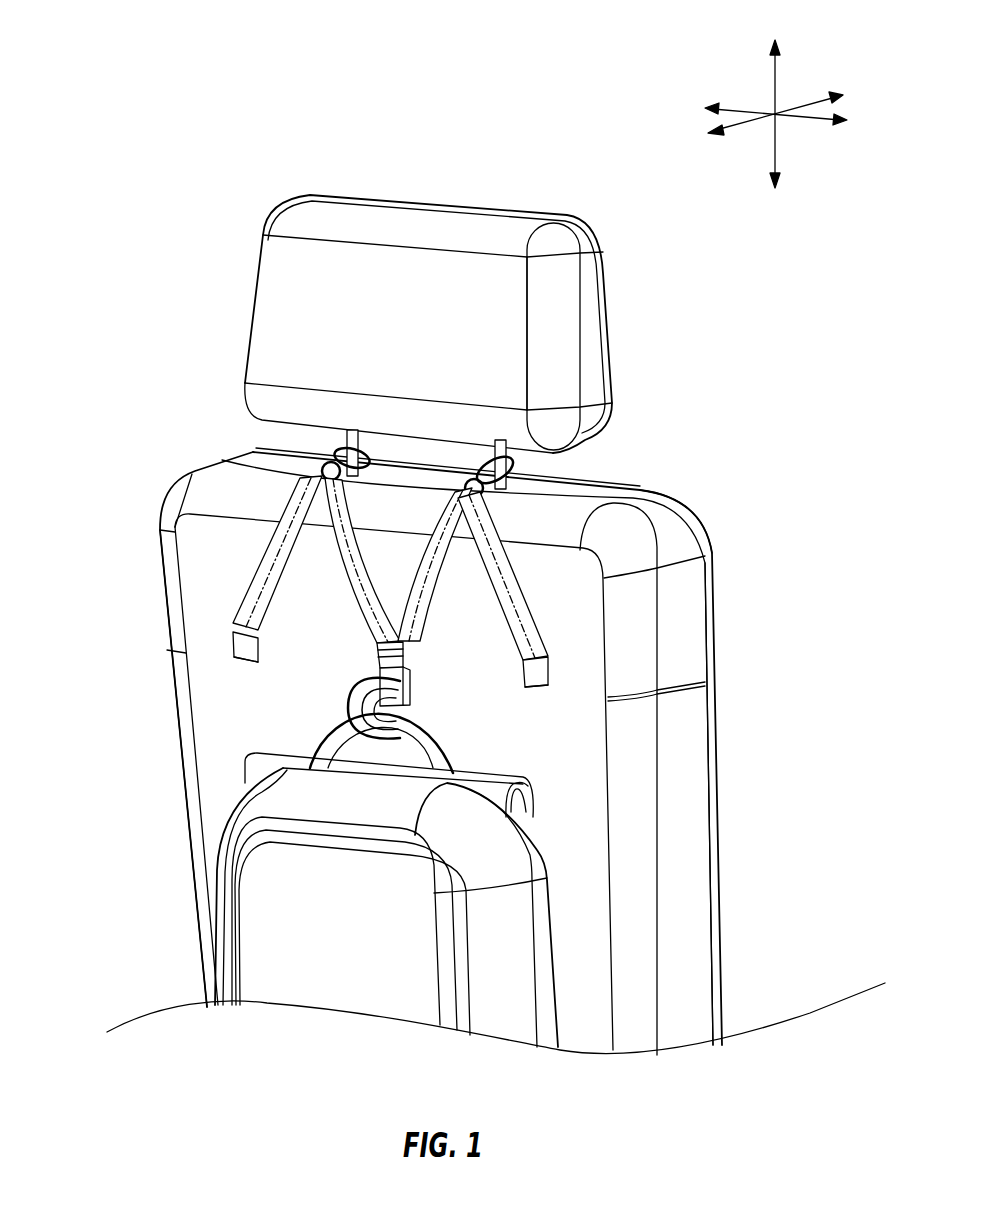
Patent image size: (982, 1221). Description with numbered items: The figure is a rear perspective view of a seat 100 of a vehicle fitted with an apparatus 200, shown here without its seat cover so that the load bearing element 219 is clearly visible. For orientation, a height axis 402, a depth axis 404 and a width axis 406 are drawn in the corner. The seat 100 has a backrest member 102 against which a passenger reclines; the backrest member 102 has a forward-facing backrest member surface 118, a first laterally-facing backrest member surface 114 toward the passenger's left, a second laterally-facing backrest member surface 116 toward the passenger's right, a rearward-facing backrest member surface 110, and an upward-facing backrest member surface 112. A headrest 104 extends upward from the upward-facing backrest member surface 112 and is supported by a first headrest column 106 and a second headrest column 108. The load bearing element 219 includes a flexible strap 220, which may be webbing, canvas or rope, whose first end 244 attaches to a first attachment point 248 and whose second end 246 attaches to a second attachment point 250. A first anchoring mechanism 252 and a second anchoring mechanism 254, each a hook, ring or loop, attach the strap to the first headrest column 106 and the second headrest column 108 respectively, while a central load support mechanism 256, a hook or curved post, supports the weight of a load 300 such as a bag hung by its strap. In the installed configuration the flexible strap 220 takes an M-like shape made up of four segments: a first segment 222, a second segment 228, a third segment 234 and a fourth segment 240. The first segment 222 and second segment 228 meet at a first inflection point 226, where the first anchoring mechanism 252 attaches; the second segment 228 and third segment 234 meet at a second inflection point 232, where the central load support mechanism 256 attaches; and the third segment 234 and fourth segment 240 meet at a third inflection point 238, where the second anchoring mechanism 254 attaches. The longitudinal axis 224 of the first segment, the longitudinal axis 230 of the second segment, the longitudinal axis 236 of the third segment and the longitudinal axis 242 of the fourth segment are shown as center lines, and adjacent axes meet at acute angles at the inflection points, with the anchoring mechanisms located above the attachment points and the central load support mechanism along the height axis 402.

The seat 100 is at (172, 186).
The backrest member 102 is at (128, 700).
The headrest 104 is at (604, 326).
The first headrest column 106 is at (347, 437).
The second headrest column 108 is at (510, 462).
The rearward-facing backrest member surface 110 is at (590, 842).
The upward-facing backrest member surface 112 is at (645, 492).
The first laterally-facing backrest member surface 114 is at (163, 601).
The second laterally-facing backrest member surface 116 is at (690, 730).
The forward-facing backrest member surface 118 is at (623, 490).
The apparatus 200 is at (512, 590).
The load bearing element 219 is at (594, 628).
The flexible strap 220 is at (304, 567).
The first segment 222 is at (257, 553).
The longitudinal axis of the first segment 224 is at (285, 540).
The first inflection point 226 is at (336, 482).
The second segment 228 is at (349, 561).
The longitudinal axis of the second segment 230 is at (346, 560).
The second inflection point 232 is at (377, 650).
The third segment 234 is at (428, 600).
The longitudinal axis of the third segment 236 is at (435, 564).
The third inflection point 238 is at (484, 500).
The fourth segment 240 is at (521, 576).
The longitudinal axis of the fourth segment 242 is at (500, 566).
The first end 244 is at (248, 664).
The second end 246 is at (532, 688).
The first attachment point 248 is at (238, 631).
The second attachment point 250 is at (538, 655).
The first anchoring mechanism 252 is at (371, 453).
The second anchoring mechanism 254 is at (490, 466).
The central load support mechanism 256 is at (410, 700).
The load 300 is at (552, 933).
The height axis 402 is at (775, 80).
The depth axis 404 is at (807, 102).
The width axis 406 is at (806, 122).